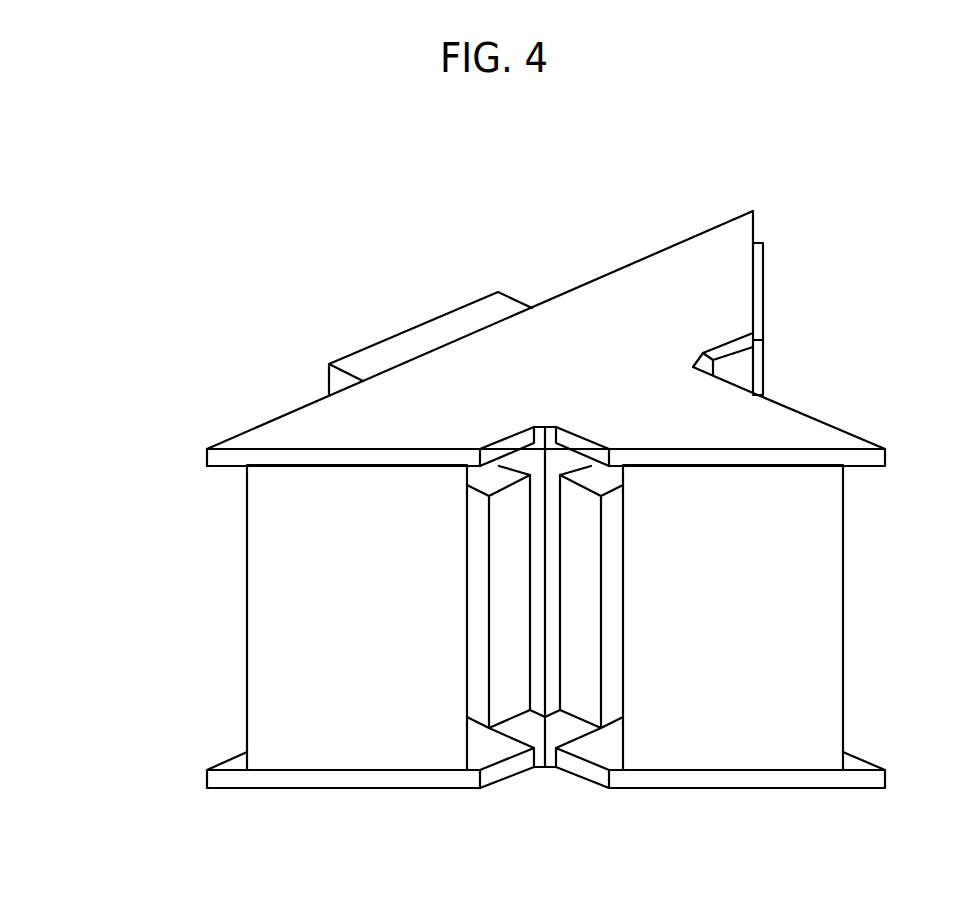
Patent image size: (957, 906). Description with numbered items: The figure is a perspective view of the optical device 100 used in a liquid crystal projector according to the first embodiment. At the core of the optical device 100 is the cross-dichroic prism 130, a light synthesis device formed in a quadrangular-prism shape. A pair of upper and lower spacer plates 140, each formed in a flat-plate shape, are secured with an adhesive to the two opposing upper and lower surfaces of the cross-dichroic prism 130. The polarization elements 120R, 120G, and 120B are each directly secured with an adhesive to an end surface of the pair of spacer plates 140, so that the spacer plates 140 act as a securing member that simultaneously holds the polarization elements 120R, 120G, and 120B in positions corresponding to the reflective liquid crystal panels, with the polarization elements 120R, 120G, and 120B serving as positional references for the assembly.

The optical device 100 is at (305, 262).
The cross-dichroic prism 130 is at (446, 326).
The spacer plate 140 is at (670, 278).
The polarization element 120B is at (758, 287).
The polarization element 120R is at (267, 580).
The polarization element 120G is at (822, 580).